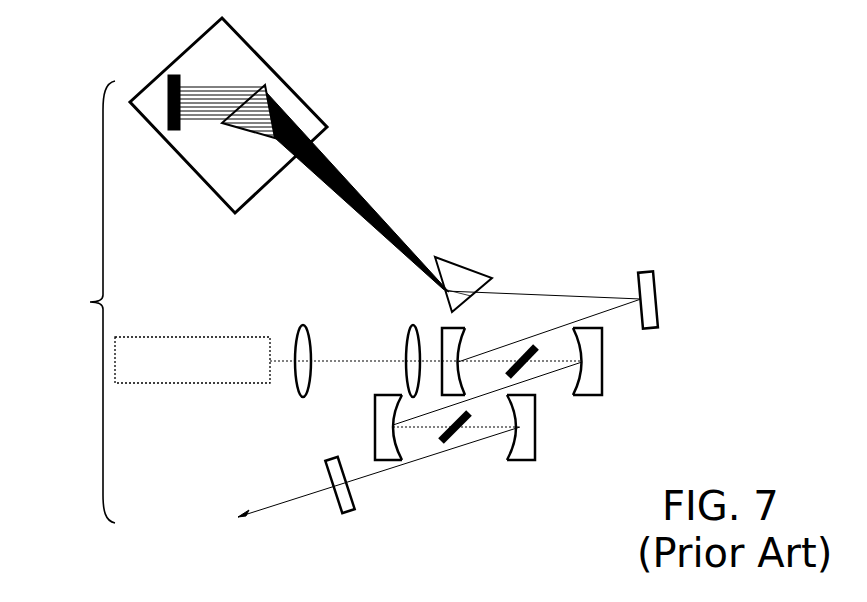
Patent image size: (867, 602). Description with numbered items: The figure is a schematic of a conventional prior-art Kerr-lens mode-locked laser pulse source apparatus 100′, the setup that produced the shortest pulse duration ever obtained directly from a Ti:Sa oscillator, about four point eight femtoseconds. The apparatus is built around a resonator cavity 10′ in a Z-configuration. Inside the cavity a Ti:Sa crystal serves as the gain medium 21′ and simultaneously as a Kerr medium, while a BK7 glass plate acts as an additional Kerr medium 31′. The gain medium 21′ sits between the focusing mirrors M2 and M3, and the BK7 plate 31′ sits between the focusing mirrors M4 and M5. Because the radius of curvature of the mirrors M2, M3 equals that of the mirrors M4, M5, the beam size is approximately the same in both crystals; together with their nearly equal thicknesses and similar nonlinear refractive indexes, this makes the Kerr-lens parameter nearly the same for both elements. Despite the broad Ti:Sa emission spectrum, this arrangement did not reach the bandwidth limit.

The resonator cavity 10′ is at (81, 317).
The laser pulse source apparatus 100′ is at (629, 153).
The focusing mirror M2 is at (436, 347).
The focusing mirror M3 is at (608, 361).
The focusing mirror M4 is at (371, 427).
The focusing mirror M5 is at (543, 427).
The gain medium 21′ is at (513, 357).
The additional Kerr medium 31′ is at (455, 443).